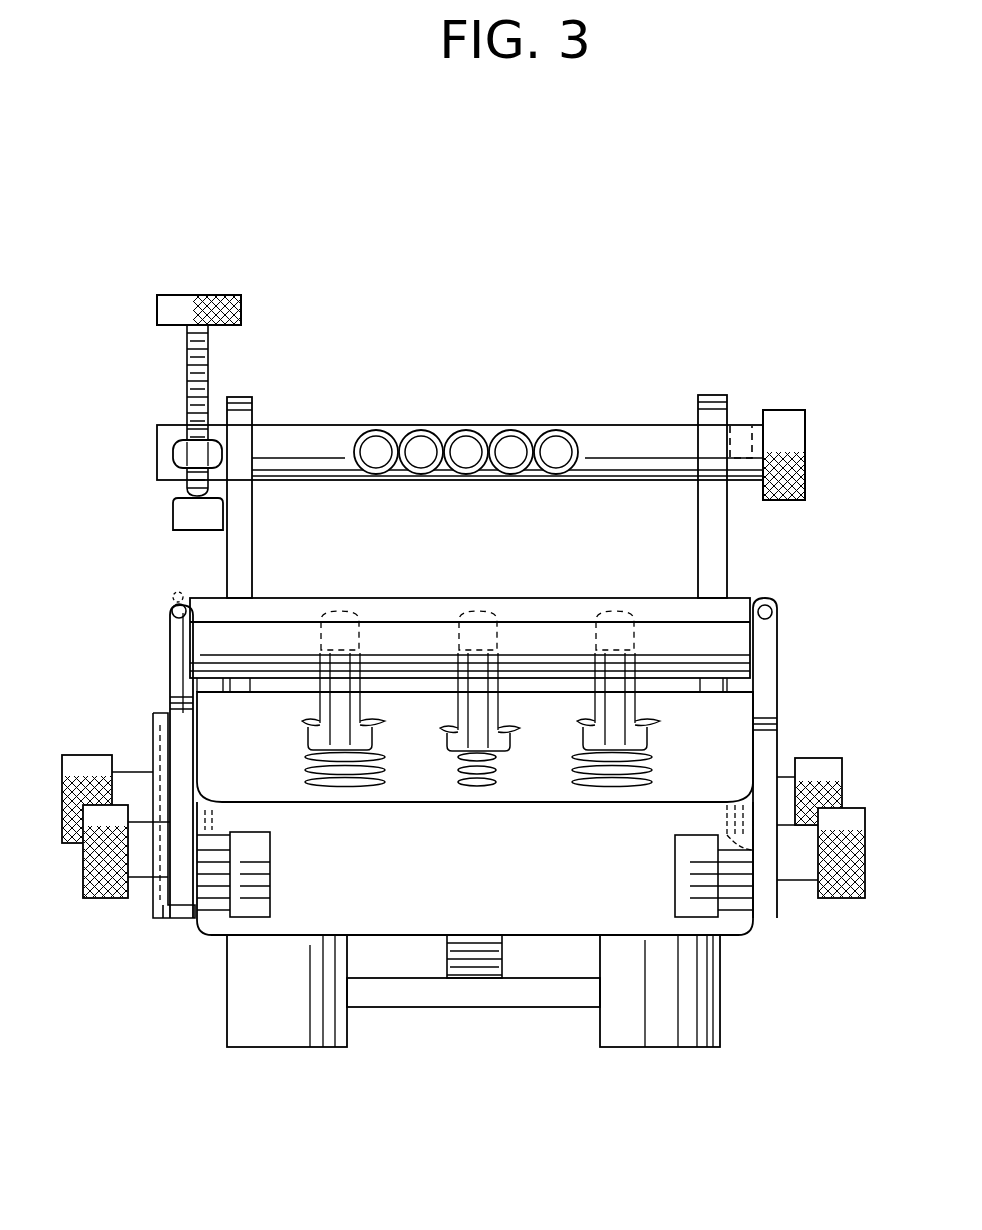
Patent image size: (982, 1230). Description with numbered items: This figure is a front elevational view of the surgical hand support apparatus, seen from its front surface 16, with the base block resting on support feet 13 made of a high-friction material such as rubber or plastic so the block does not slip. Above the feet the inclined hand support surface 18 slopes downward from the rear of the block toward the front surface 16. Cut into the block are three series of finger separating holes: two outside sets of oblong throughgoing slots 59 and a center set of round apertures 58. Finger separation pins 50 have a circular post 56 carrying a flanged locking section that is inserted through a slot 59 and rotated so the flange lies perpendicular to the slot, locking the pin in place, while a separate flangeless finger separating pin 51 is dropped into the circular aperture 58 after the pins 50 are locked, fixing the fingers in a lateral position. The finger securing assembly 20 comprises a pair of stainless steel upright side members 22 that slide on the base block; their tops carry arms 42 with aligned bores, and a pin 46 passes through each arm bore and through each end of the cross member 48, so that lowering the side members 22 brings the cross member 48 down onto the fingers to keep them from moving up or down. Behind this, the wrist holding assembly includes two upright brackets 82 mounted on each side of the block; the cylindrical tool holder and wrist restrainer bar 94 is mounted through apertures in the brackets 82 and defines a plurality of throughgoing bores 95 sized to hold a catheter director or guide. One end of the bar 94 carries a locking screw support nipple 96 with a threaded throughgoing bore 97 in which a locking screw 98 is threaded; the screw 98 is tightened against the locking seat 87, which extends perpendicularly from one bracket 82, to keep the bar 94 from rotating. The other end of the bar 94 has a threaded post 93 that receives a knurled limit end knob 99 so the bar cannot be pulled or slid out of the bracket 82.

The support feet 13 is at (700, 1012).
The front surface 16 is at (504, 873).
The inclined hand support surface 18 is at (695, 750).
The finger securing assembly 20 is at (439, 739).
The upright side members 22 is at (170, 684).
The arms 42 is at (172, 611).
The pin 46 is at (165, 598).
The cross member 48 is at (735, 602).
The finger separation pins 50 is at (628, 708).
The finger separating pin 51 is at (468, 712).
The circular post 56 is at (776, 610).
The circular aperture 58 is at (500, 772).
The throughgoing slot 59 is at (296, 764).
The upright brackets 82 is at (227, 550).
The locking seat 87 is at (173, 528).
The threaded post 93 is at (741, 440).
The tool holder and wrist restrainer bar 94 is at (330, 426).
The throughgoing bores 95 is at (562, 447).
The locking screw support nipple 96 is at (175, 440).
The threaded throughgoing bore 97 is at (170, 452).
The locking screw 98 is at (220, 295).
The knurled limit end knob 99 is at (806, 446).